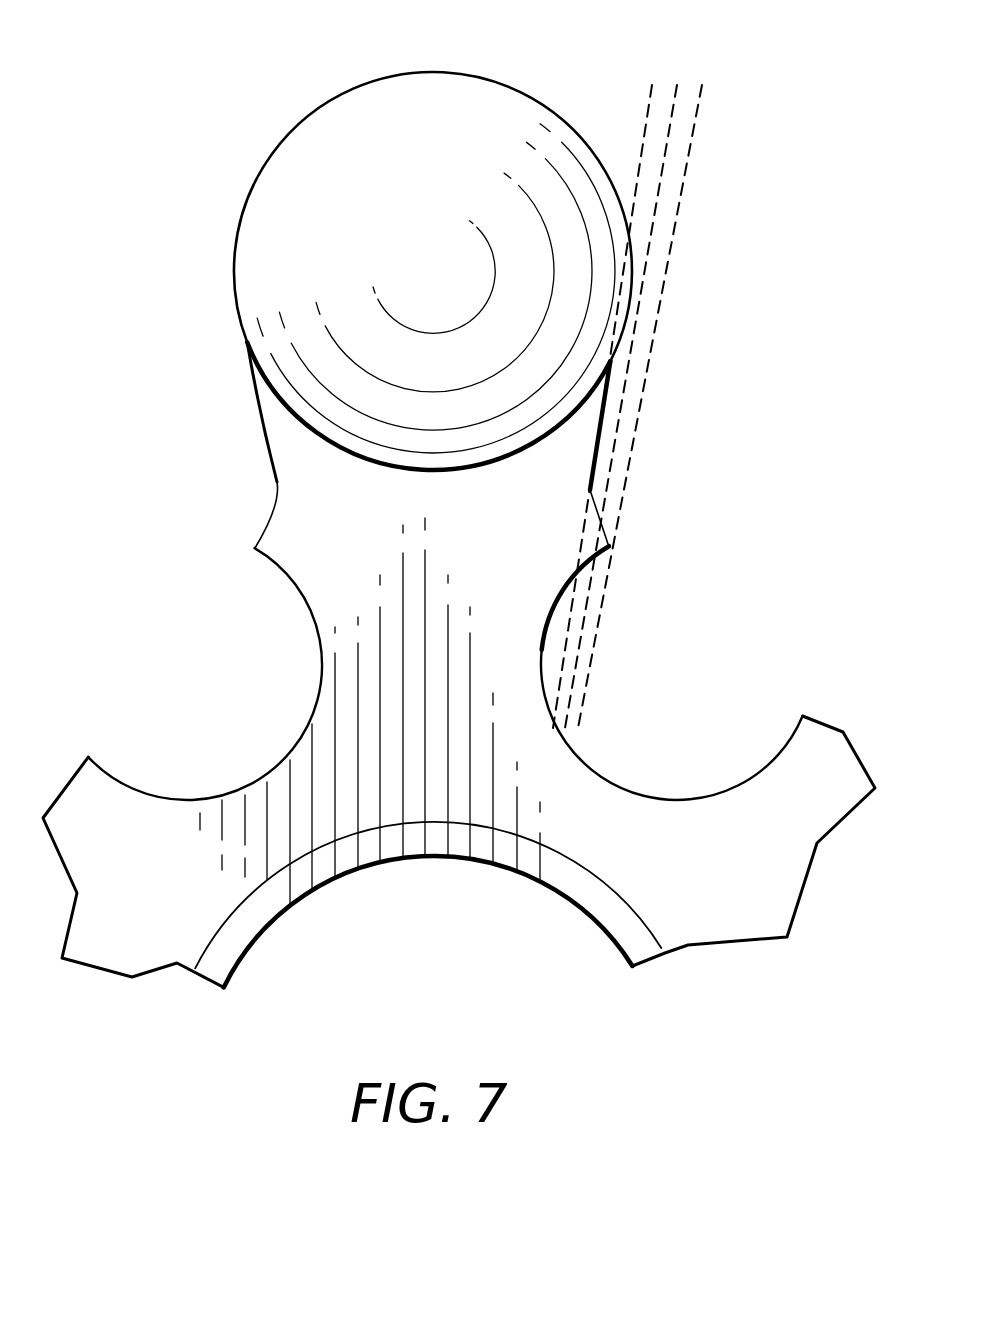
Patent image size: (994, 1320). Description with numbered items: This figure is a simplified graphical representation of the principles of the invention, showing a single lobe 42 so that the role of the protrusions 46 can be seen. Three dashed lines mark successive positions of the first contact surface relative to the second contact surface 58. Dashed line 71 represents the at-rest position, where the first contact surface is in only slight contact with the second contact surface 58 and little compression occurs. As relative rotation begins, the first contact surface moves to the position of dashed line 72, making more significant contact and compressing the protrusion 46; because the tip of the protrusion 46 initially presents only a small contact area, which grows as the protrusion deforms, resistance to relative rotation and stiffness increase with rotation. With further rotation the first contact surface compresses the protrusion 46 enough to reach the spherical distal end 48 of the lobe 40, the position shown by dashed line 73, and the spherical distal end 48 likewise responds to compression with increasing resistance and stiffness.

The lobe 40 is at (681, 866).
The lobe 42 is at (262, 432).
The protrusion 46 is at (258, 541).
The spherical distal end 48 is at (476, 91).
The second contact surface 58 is at (603, 424).
The dashed line 71 is at (597, 623).
The dashed line 72 is at (575, 667).
The dashed line 73 is at (566, 620).